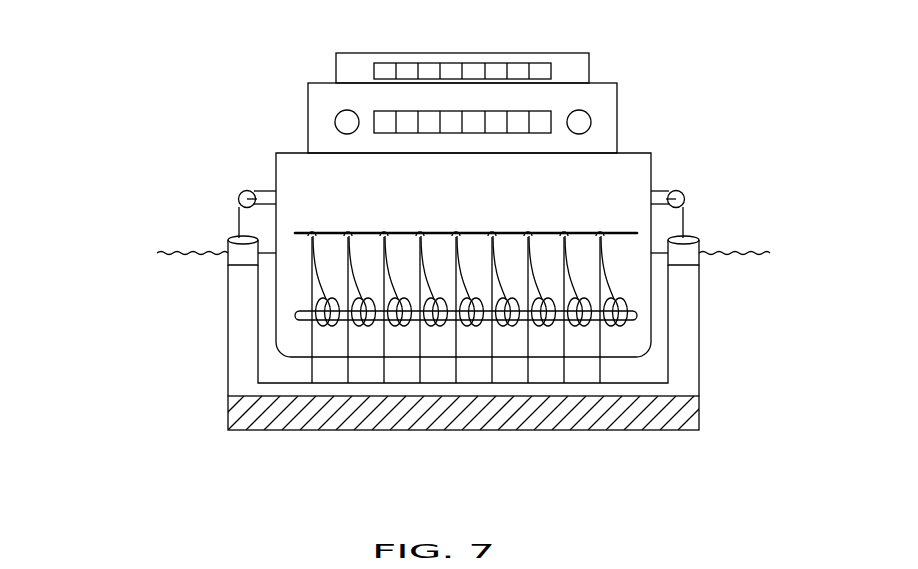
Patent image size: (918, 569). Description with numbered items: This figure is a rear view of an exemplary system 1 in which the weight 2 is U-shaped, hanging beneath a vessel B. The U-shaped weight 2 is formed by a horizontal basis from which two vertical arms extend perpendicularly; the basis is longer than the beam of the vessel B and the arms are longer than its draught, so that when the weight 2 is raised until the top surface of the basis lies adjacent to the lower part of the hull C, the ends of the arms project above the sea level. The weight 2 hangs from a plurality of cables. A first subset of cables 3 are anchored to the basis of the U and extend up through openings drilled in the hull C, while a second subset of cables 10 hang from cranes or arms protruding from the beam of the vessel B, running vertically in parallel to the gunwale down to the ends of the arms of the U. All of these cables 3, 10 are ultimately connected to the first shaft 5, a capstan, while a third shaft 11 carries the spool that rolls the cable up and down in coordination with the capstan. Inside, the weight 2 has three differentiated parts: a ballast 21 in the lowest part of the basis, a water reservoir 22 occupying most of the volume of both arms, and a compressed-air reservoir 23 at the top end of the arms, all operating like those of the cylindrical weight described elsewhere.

The system 1 is at (96, 109).
The weight 2 is at (192, 325).
The cables 3 is at (386, 340).
The first shaft 5 is at (330, 237).
The cables 10 is at (237, 213).
The third shaft 11 is at (605, 318).
The ballast 21 is at (668, 412).
The water reservoir 22 is at (680, 340).
The compressed-air reservoir 23 is at (242, 255).
The vessel B is at (708, 96).
The hull C is at (652, 170).